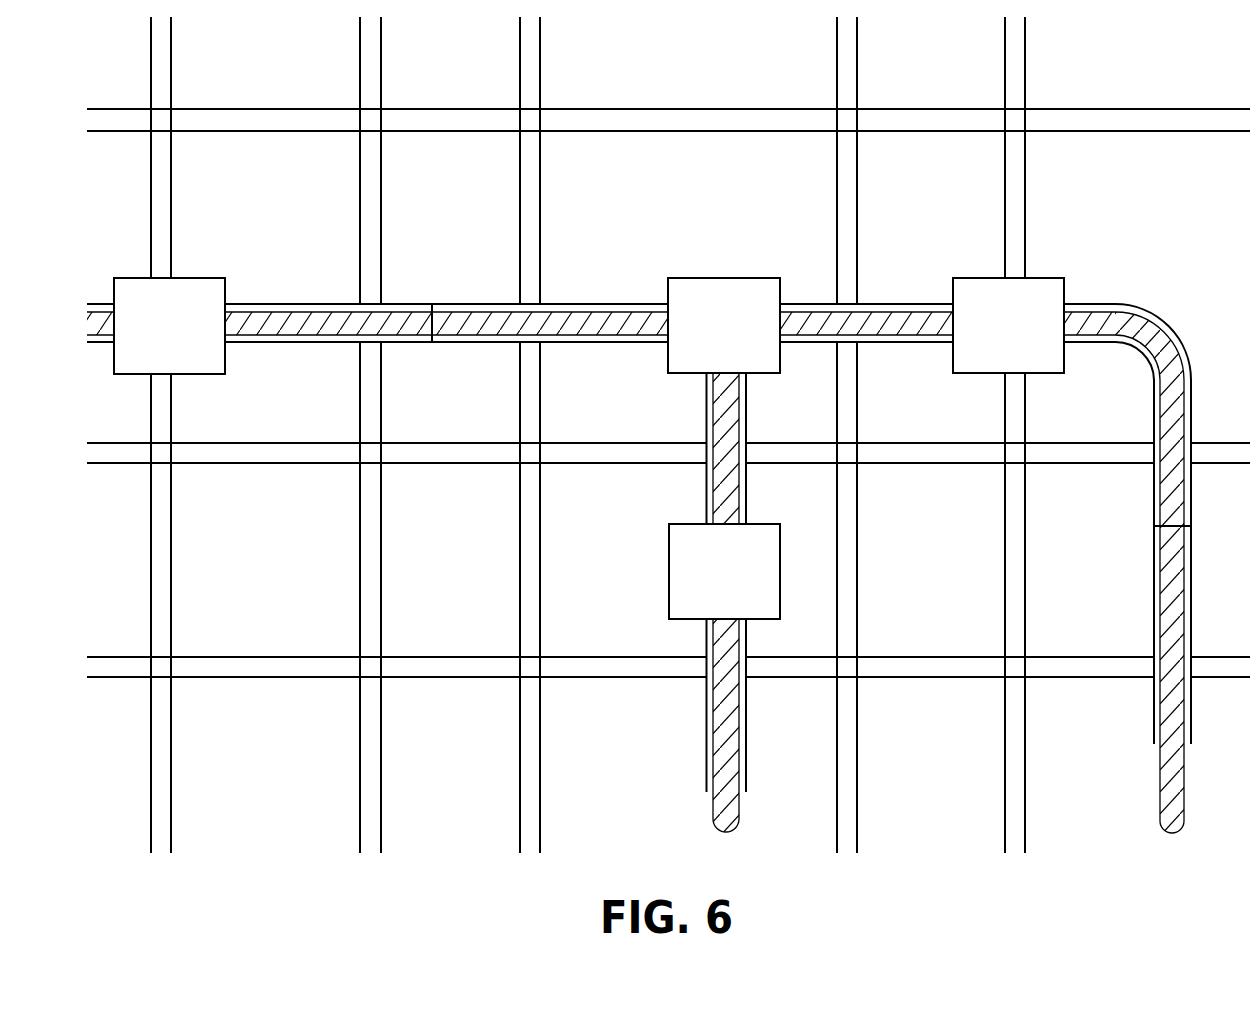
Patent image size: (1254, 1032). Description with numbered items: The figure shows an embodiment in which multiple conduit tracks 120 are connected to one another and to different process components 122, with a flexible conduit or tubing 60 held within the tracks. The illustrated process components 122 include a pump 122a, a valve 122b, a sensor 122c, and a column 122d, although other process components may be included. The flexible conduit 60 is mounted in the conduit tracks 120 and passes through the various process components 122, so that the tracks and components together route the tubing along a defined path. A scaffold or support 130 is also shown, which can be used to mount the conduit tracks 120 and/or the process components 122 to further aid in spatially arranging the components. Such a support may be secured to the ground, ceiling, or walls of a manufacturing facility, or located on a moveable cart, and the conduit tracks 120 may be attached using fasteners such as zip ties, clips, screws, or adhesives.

The flexible conduit 60 is at (581, 322).
The conduit tracks 120 is at (307, 343).
The process components 122 is at (786, 384).
The pump 122a is at (207, 277).
The valve 122b is at (733, 277).
The sensor 122c is at (668, 538).
The column 122d is at (1038, 277).
The support 130 is at (478, 672).